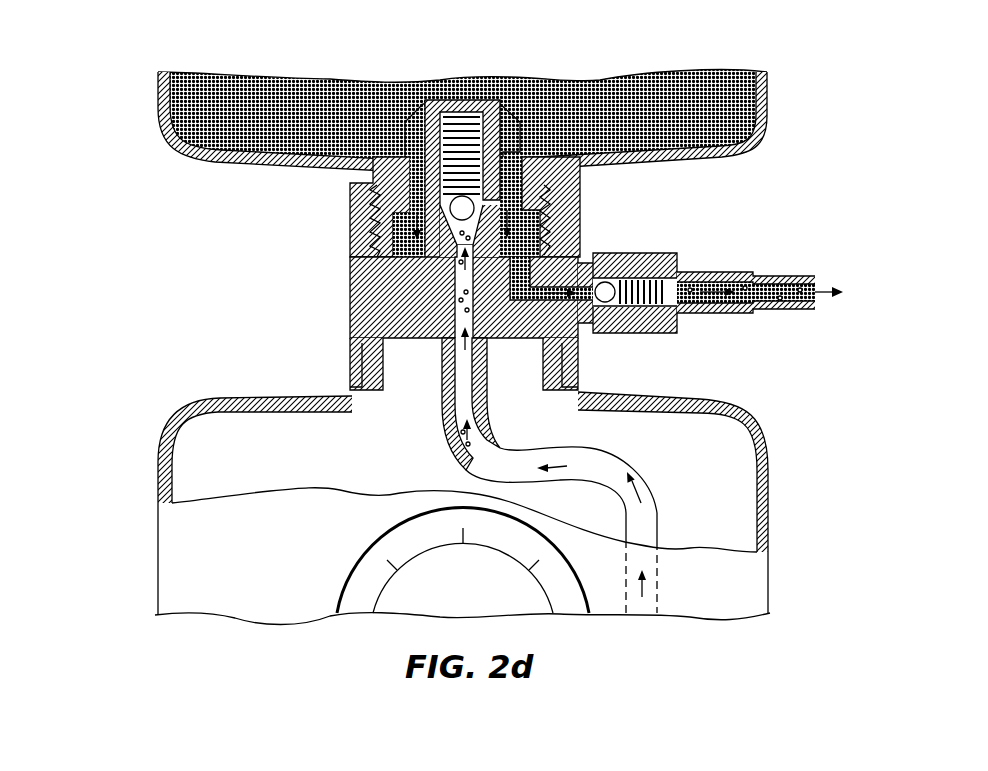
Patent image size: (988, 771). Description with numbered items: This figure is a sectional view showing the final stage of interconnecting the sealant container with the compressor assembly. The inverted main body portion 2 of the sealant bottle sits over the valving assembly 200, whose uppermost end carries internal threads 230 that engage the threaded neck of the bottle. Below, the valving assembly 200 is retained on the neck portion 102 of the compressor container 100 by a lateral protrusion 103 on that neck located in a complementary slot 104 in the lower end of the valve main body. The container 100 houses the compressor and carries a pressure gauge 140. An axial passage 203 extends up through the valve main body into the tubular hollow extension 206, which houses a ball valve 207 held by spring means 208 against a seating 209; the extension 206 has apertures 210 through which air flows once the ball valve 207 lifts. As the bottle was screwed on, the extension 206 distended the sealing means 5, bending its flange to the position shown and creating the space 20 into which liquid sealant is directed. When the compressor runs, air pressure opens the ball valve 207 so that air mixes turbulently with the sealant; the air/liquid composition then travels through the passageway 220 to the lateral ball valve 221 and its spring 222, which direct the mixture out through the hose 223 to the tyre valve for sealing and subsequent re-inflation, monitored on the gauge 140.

The main body portion 2 is at (768, 88).
The sealing means 5 is at (408, 86).
The tubular hollow extension 206 is at (407, 117).
The spring means 208 is at (505, 118).
The apertures 210 is at (380, 163).
The internal threads 230 is at (353, 227).
The ball valve 207 is at (547, 172).
The space 20 is at (455, 205).
The seating 209 is at (450, 253).
The passage 203 is at (460, 291).
The valving assembly 200 is at (308, 318).
The passageway 220 is at (527, 307).
The spring 222 is at (640, 253).
The ball valve 221 is at (603, 302).
The hose 223 is at (717, 313).
The protrusion 103 is at (355, 363).
The neck portion 102 is at (352, 394).
The slot 104 is at (397, 390).
The container 100 is at (126, 550).
The pressure gauge 140 is at (357, 586).